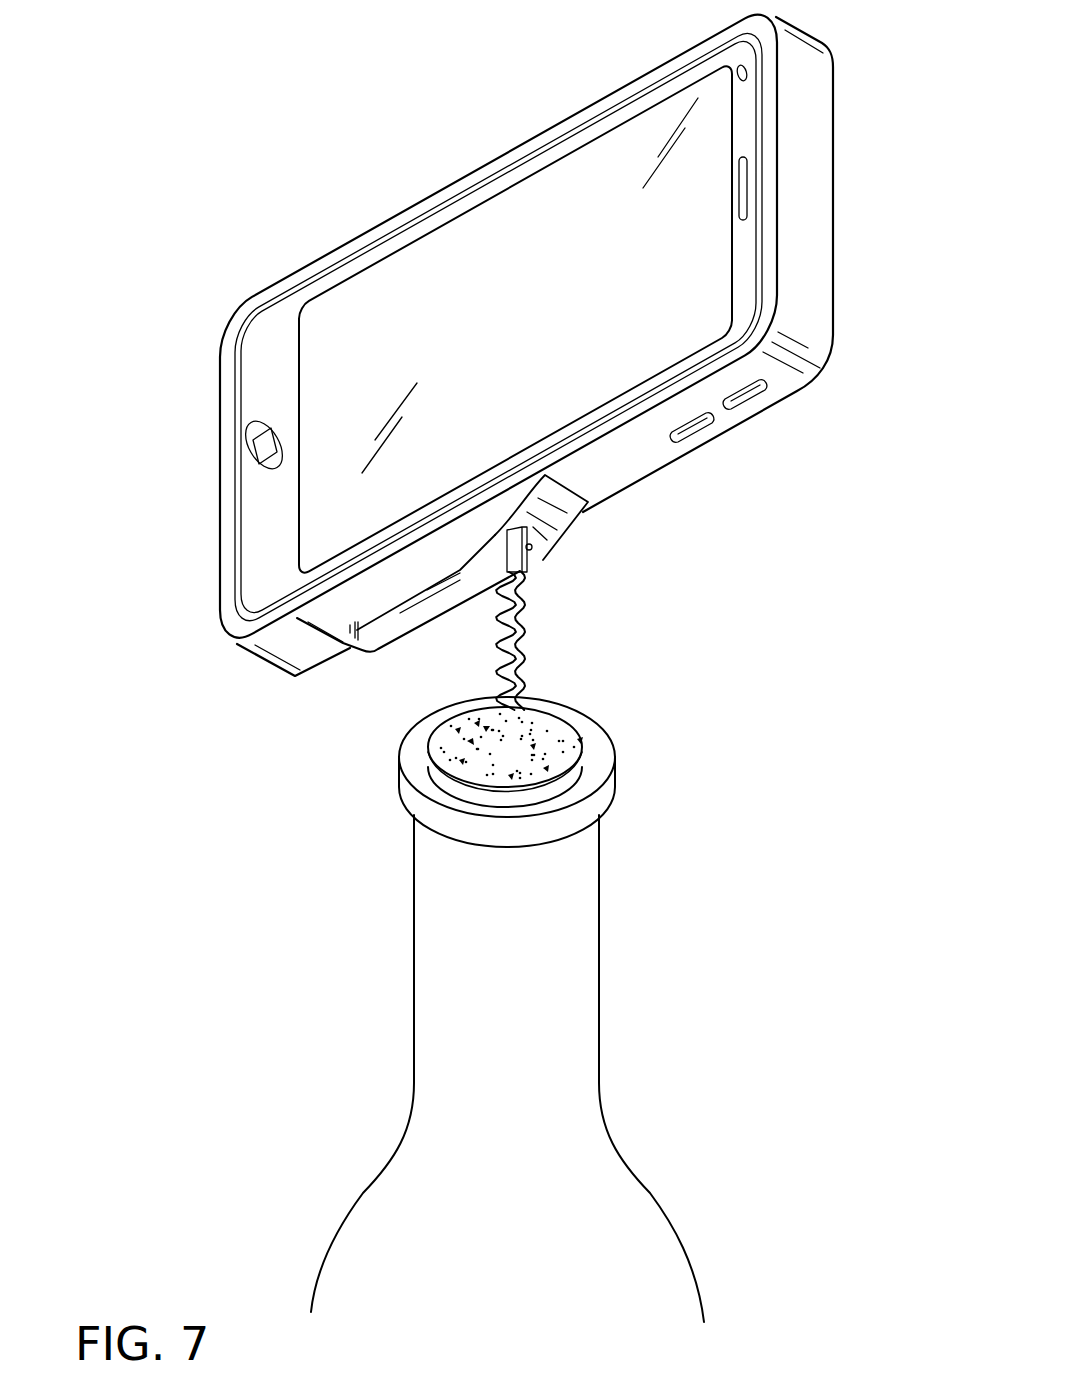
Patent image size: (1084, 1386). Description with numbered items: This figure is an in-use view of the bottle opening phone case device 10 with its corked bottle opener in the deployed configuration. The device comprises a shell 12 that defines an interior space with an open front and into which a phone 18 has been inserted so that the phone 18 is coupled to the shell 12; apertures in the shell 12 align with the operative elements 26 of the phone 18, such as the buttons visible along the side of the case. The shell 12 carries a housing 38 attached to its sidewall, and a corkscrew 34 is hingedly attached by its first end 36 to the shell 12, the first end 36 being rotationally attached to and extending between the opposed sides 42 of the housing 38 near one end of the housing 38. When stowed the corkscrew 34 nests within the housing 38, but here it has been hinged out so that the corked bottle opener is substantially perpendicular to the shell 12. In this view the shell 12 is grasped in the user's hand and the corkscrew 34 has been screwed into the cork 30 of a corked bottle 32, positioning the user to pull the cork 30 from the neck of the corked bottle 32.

The bottle opening phone case device 10 is at (253, 159).
The shell 12 is at (817, 147).
The phone 18 is at (543, 227).
The operative element 26 is at (705, 428).
The cork 30 is at (588, 742).
The corked bottle 32 is at (598, 970).
The corkscrew 34 is at (523, 627).
The first end 36 is at (533, 547).
The housing 38 is at (357, 597).
The opposed sides 42 is at (390, 593).